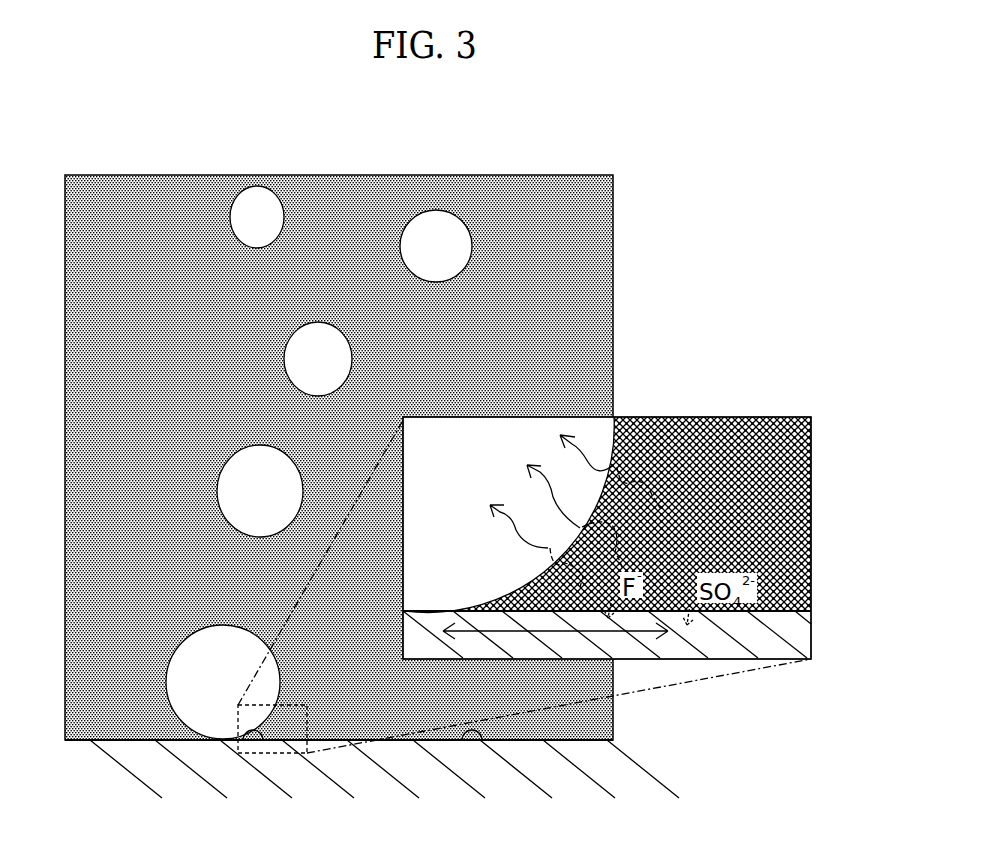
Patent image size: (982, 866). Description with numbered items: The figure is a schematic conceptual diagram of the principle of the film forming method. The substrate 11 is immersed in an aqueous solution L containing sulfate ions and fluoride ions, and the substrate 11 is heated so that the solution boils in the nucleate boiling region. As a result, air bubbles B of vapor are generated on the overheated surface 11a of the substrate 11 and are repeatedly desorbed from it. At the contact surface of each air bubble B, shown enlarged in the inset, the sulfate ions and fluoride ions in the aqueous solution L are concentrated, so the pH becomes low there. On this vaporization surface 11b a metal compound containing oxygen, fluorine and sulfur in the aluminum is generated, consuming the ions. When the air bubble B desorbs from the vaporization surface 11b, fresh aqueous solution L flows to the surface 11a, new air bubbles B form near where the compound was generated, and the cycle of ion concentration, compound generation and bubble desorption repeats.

The aqueous solution L is at (575, 352).
The air bubble B is at (213, 717).
The substrate 11 is at (600, 768).
The surface of the substrate 11a is at (480, 740).
The vaporization surface 11b is at (255, 738).